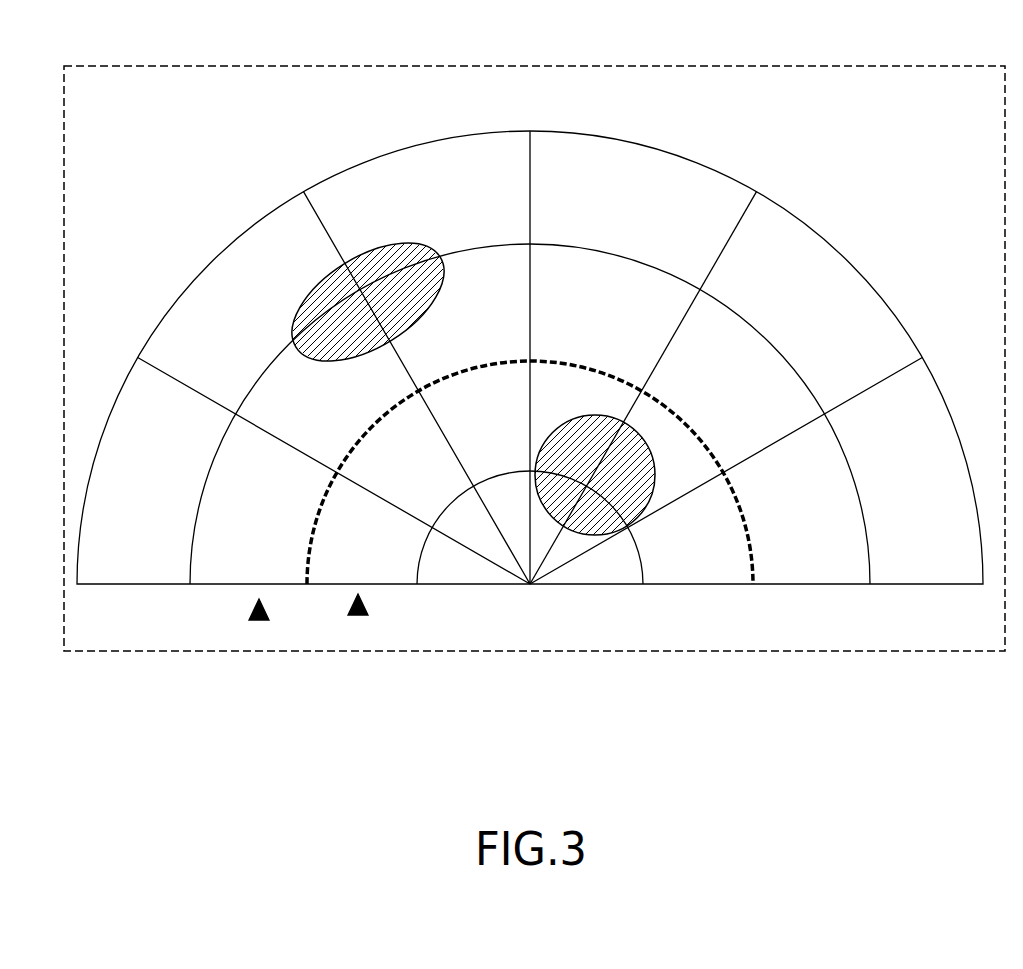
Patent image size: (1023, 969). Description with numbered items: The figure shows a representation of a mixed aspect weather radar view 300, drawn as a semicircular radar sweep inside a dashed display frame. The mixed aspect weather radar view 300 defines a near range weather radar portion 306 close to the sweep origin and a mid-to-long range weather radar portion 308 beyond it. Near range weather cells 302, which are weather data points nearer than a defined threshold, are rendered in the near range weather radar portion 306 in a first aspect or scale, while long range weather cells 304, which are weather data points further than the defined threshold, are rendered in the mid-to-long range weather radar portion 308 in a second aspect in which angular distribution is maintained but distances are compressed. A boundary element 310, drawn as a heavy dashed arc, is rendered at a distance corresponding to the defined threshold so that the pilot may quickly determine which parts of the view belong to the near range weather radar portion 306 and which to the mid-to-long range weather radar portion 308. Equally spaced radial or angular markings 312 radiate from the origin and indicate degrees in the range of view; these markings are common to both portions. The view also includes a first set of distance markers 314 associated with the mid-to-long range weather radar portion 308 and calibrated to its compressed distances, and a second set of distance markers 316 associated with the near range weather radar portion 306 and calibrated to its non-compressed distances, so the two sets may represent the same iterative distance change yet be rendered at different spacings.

The mixed aspect weather radar view 300 is at (68, 103).
The near range weather cells 302 is at (637, 442).
The long range weather cells 304 is at (335, 312).
The near range weather radar portion 306 is at (358, 617).
The mid-to-long range weather radar portion 308 is at (260, 622).
The boundary element 310 is at (755, 552).
The radial or angular markings 312 is at (733, 238).
The first set of distance markers 314 is at (868, 565).
The second set of distance markers 316 is at (641, 565).